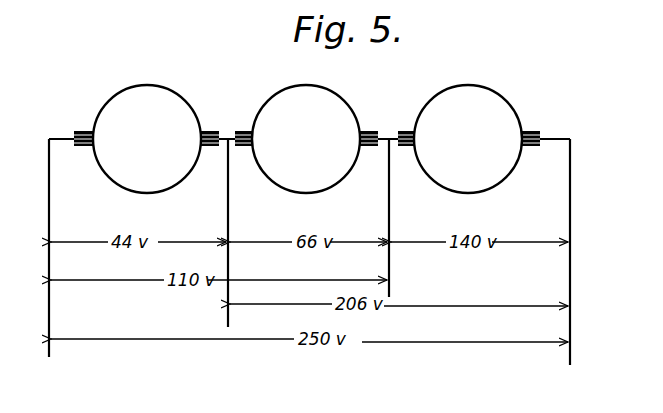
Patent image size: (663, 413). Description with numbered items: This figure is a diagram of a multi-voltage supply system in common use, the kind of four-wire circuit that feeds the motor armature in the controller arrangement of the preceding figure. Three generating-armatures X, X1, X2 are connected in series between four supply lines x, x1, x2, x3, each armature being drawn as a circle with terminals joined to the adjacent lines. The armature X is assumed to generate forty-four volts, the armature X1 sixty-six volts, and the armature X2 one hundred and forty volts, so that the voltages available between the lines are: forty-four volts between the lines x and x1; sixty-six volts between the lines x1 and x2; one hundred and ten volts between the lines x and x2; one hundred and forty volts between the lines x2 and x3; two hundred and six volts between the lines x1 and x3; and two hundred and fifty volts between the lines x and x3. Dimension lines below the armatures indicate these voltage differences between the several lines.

The generating-armature X is at (169, 99).
The generating-armature X1 is at (336, 98).
The generating-armature X2 is at (498, 107).
The line x is at (58, 251).
The line x1 is at (240, 237).
The line x2 is at (402, 220).
The line x3 is at (582, 252).